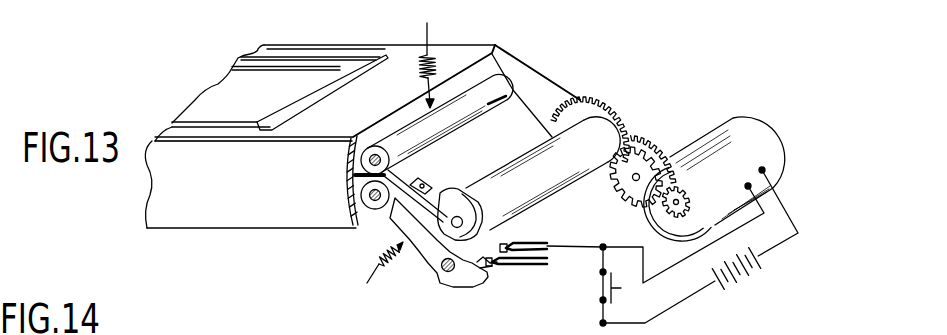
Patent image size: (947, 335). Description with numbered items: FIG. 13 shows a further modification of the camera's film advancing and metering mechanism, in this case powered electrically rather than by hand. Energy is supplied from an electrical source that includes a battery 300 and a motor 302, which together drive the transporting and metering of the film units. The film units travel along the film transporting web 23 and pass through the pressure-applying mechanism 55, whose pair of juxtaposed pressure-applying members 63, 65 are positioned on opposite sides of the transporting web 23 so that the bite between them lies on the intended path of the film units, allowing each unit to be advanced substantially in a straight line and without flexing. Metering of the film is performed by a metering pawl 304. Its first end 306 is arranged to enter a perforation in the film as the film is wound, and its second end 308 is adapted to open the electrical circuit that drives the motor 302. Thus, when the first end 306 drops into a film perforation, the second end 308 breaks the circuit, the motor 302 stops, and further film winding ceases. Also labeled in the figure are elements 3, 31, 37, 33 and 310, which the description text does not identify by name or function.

The platform 3 is at (212, 74).
The base body 31 is at (207, 208).
The spring 37 is at (357, 45).
The pressure-applying mechanism 55 is at (494, 112).
The pressure-applying member 63 is at (514, 80).
The film transporting web 23 is at (514, 118).
The motor 302 is at (697, 121).
The first end 306 is at (428, 182).
The drive roller 33 is at (560, 185).
The switch contacts 310 is at (530, 243).
The pressure-applying member 65 is at (381, 207).
The metering pawl 304 is at (418, 238).
The second end 308 is at (483, 287).
The battery 300 is at (738, 290).